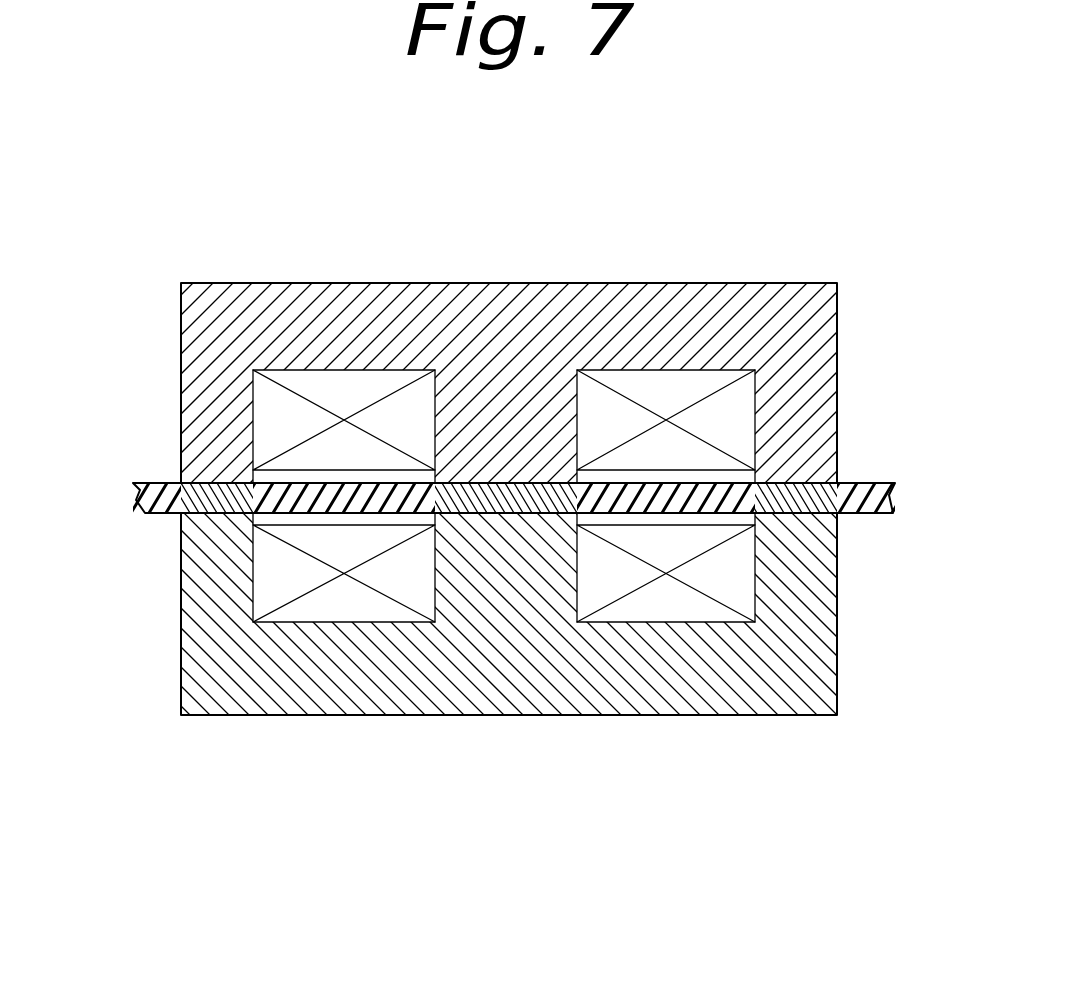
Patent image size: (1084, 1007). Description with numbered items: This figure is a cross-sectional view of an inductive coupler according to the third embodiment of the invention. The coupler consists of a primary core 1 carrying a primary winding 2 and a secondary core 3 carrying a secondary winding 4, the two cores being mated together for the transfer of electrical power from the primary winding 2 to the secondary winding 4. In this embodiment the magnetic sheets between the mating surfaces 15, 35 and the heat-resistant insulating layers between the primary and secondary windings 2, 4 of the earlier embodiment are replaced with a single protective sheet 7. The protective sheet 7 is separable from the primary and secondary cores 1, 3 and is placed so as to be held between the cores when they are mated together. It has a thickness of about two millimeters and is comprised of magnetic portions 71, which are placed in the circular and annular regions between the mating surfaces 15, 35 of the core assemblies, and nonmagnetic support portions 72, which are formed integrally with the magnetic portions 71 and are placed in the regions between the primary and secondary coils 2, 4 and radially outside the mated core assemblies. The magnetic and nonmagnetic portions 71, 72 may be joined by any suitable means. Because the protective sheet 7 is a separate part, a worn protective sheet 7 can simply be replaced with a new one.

The primary core 1 is at (202, 337).
The primary winding 2 is at (308, 387).
The secondary core 3 is at (198, 643).
The secondary winding 4 is at (340, 625).
The protective sheet 7 is at (526, 504).
The mating surface 15 is at (201, 522).
The mating surface 35 is at (235, 490).
The magnetic portion 71 is at (495, 490).
The nonmagnetic support portion 72 is at (327, 487).